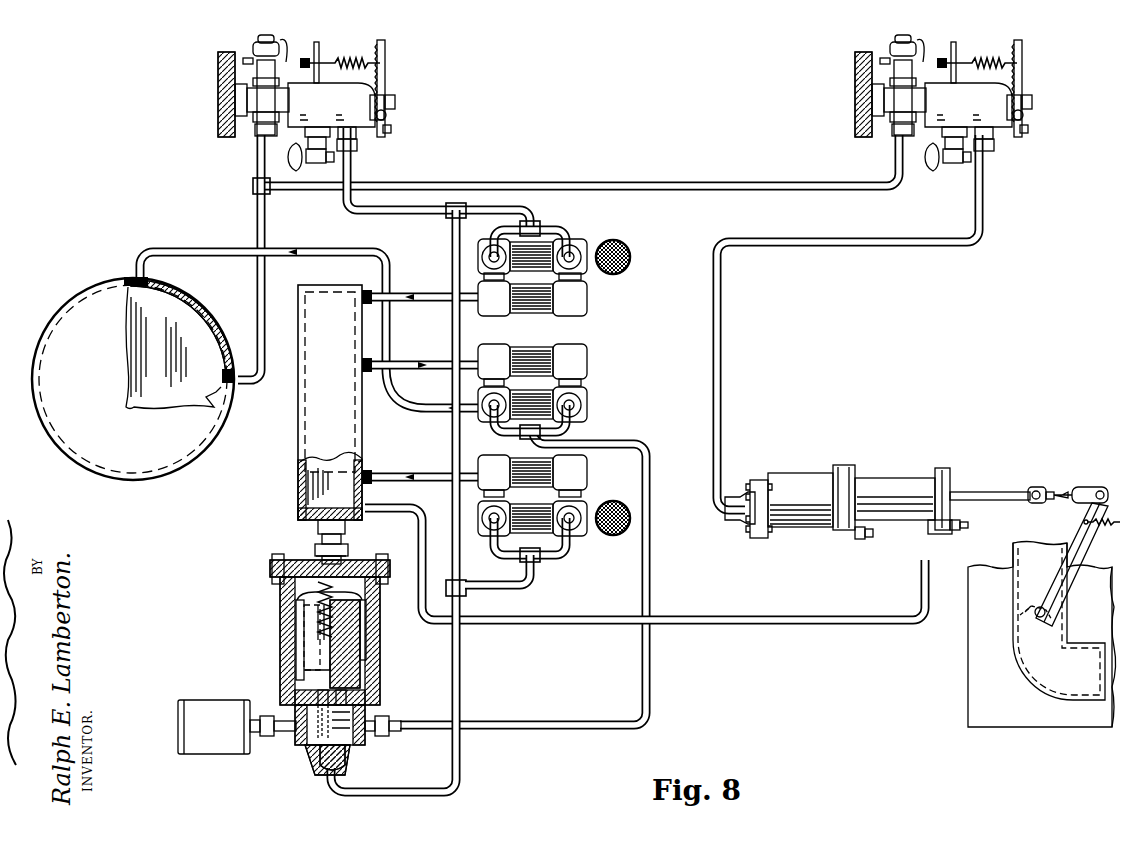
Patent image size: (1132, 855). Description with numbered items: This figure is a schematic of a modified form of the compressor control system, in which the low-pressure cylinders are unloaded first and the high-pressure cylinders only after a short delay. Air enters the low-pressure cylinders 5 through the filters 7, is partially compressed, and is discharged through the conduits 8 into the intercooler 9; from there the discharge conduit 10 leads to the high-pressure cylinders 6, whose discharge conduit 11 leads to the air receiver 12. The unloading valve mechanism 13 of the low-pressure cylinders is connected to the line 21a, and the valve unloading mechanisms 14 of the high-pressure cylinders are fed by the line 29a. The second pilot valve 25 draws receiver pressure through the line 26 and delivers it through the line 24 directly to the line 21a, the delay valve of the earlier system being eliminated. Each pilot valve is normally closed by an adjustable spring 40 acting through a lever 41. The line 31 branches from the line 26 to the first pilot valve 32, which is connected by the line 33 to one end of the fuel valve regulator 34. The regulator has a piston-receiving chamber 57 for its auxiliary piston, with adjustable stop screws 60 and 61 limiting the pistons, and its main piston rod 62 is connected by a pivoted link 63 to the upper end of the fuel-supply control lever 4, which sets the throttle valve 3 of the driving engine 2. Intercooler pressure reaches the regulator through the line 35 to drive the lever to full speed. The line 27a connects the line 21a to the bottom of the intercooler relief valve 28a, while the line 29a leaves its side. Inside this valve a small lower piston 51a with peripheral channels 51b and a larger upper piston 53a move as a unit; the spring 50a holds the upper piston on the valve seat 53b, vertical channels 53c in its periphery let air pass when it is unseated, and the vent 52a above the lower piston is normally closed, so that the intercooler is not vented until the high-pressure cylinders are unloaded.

The driving engine 2 is at (966, 656).
The throttle valve 3 is at (1034, 600).
The fuel-supply control lever 4 is at (1078, 526).
The low-pressure cylinders 5 is at (587, 296).
The high-pressure cylinders 6 is at (592, 345).
The filters 7 is at (615, 243).
The conduits 8 is at (423, 294).
The intercooler 9 is at (335, 424).
The discharge conduit 10 is at (418, 362).
The discharge conduit 11 is at (249, 248).
The air receiver 12 is at (133, 378).
The unloading valve mechanism 13 is at (574, 250).
The valve unloading mechanisms 14 is at (585, 405).
The line 21a is at (535, 216).
The line 24 is at (386, 208).
The second pilot valve 25 is at (301, 103).
The line 26 is at (257, 297).
The line 27a is at (384, 792).
The intercooler relief valve 28a is at (383, 657).
The line 29a is at (649, 672).
The line 31 is at (722, 184).
The first pilot valve 32 is at (938, 103).
The line 33 is at (917, 240).
The fuel valve regulator 34 is at (834, 468).
The line 35 is at (590, 618).
The adjustable spring 40 is at (363, 62).
The lever 41 is at (385, 90).
The spring 50a is at (283, 608).
The lower piston 51a is at (368, 694).
The channels 51b is at (292, 697).
The vent 52a is at (306, 746).
The upper piston 53a is at (362, 632).
The valve seat 53b is at (293, 672).
The vertical channels 53c is at (370, 612).
The piston-receiving chamber 57 is at (741, 505).
The adjustable stop screw 60 is at (861, 539).
The adjustable stop screw 61 is at (758, 478).
The piston rod 62 is at (966, 492).
The pivoted link 63 is at (1062, 492).